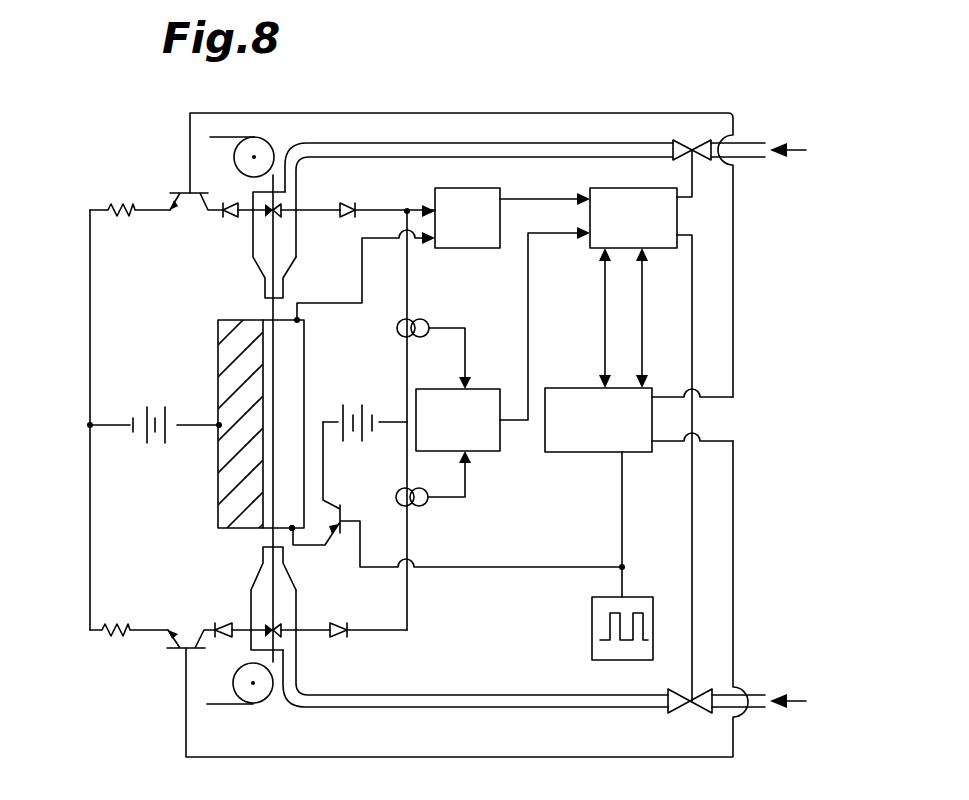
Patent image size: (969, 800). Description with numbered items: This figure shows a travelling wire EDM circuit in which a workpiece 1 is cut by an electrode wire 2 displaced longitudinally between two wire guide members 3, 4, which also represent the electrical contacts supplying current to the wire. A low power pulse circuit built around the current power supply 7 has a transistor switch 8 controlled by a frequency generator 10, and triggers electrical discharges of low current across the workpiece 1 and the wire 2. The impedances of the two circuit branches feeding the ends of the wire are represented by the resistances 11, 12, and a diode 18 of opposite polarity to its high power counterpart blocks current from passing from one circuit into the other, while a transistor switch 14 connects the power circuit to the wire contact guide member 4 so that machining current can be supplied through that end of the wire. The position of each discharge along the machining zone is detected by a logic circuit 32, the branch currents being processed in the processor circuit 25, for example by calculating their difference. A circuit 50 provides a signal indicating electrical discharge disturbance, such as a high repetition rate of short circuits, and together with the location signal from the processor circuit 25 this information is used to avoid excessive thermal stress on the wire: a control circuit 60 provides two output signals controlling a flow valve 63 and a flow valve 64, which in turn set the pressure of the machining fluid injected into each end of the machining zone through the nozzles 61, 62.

The workpiece 1 is at (262, 468).
The electrode wire 2 is at (266, 538).
The wire guide member 3 is at (271, 214).
The wire guide member 4 is at (270, 627).
The current power supply 7 is at (367, 398).
The transistor switch 8 is at (340, 509).
The frequency generator 10 is at (600, 652).
The resistance 11 is at (125, 217).
The resistance 12 is at (125, 637).
The transistor switch 14 is at (182, 652).
The diode 18 is at (344, 646).
The processor circuit 25 is at (487, 439).
The logic circuit 32 is at (560, 468).
The circuit providing a disturbance signal 50 is at (483, 188).
The control circuit 60 is at (635, 205).
The nozzle 61 is at (293, 237).
The nozzle 62 is at (297, 607).
The flow valve 63 is at (692, 141).
The flow valve 64 is at (705, 703).